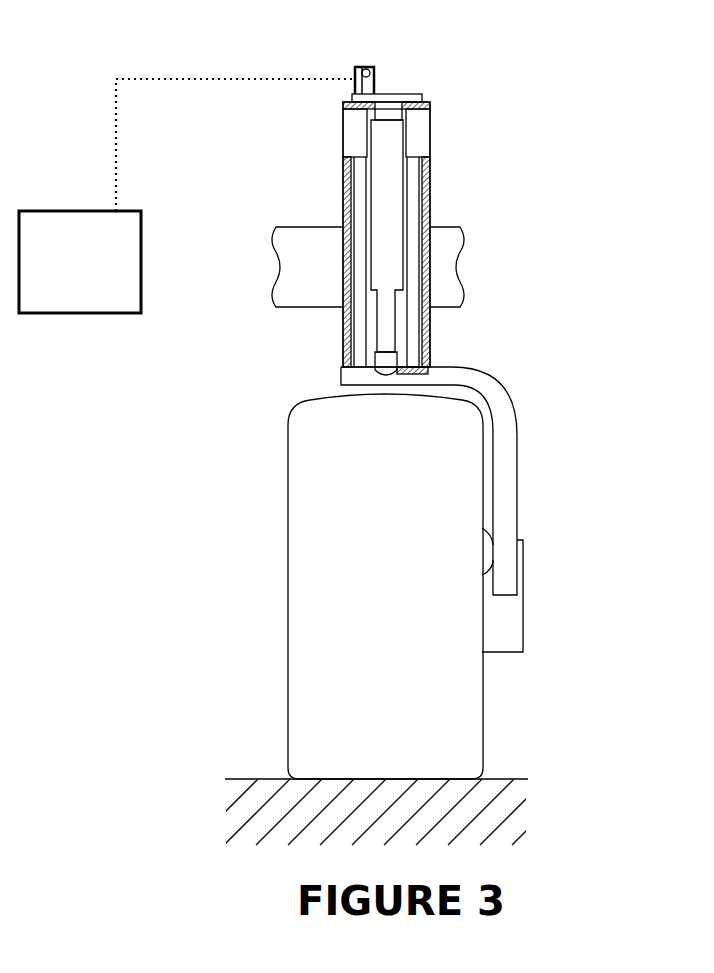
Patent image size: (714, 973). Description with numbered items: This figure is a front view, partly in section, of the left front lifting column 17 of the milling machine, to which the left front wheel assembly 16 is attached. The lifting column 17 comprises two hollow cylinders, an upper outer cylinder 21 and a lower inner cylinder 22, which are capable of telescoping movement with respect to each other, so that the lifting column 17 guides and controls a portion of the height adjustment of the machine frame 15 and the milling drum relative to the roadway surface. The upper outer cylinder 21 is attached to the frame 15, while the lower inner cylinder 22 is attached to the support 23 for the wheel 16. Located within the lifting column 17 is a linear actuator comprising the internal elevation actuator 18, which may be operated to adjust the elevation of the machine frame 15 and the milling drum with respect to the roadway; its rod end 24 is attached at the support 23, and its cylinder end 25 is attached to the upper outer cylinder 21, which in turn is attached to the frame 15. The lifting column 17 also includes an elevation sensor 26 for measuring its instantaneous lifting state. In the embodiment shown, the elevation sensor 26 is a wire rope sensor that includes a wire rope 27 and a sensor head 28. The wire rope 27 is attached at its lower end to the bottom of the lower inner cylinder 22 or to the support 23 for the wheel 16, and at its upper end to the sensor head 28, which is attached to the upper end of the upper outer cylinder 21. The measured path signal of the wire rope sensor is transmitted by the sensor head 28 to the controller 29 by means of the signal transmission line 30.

The frame 15 is at (442, 248).
The left front wheel assembly 16 is at (393, 560).
The left front lifting column 17 is at (462, 165).
The internal elevation actuator 18 is at (385, 209).
The upper outer cylinder 21 is at (430, 290).
The lower inner cylinder 22 is at (430, 332).
The support 23 is at (515, 465).
The rod end 24 is at (385, 357).
The cylinder end 25 is at (393, 113).
The elevation sensor 26 is at (340, 66).
The wire rope 27 is at (350, 328).
The sensor head 28 is at (372, 80).
The controller 29 is at (80, 262).
The signal transmission line 30 is at (170, 79).